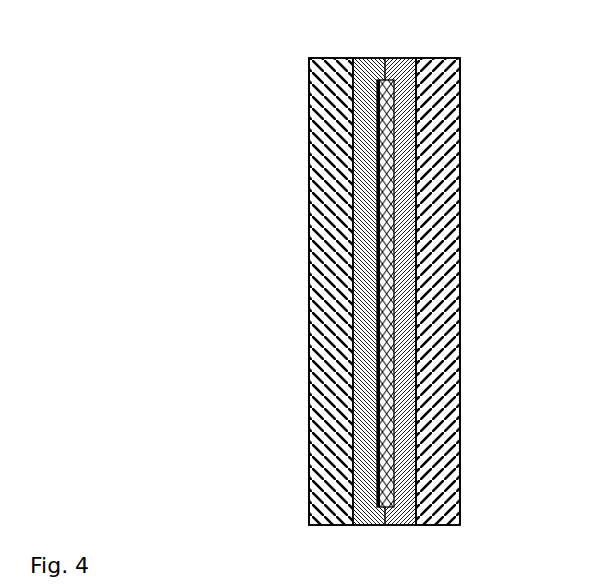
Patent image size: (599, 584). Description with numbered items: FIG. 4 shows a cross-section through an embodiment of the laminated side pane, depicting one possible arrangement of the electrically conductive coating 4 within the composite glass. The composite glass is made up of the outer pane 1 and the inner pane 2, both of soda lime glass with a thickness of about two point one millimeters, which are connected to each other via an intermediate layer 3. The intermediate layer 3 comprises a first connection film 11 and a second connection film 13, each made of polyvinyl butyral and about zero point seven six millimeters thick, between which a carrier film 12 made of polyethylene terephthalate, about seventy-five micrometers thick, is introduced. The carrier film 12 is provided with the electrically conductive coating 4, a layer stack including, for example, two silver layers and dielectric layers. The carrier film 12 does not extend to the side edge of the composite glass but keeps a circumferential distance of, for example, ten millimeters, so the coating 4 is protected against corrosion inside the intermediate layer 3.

The outer pane 1 is at (453, 94).
The inner pane 2 is at (320, 96).
The intermediate layer 3 is at (416, 54).
The electrically conductive coating 4 is at (383, 304).
The first connection film 11 is at (413, 193).
The carrier film 12 is at (386, 265).
The second connection film 13 is at (367, 191).